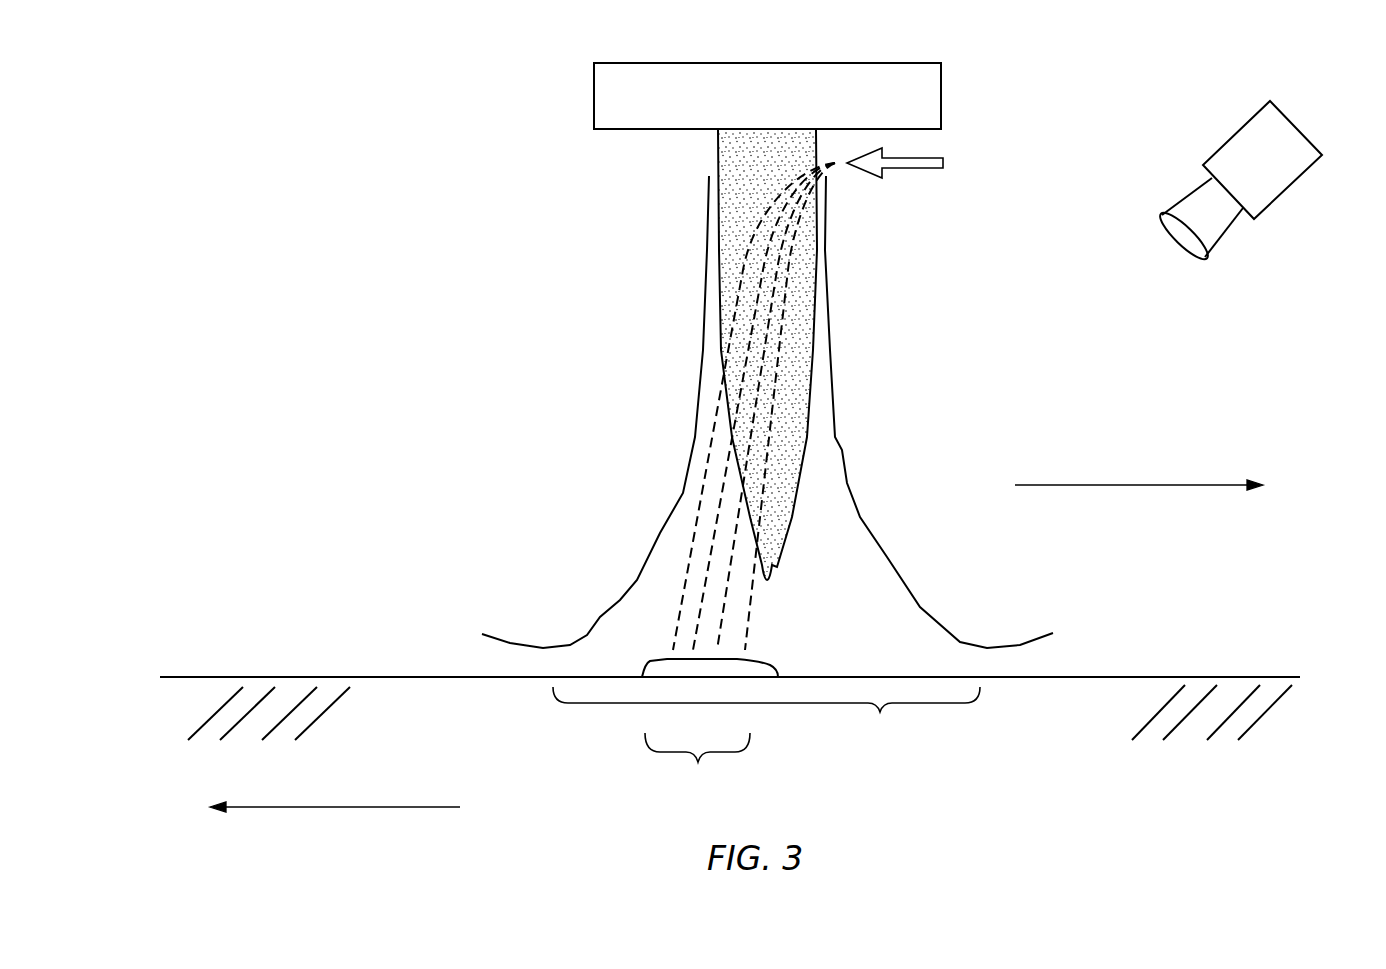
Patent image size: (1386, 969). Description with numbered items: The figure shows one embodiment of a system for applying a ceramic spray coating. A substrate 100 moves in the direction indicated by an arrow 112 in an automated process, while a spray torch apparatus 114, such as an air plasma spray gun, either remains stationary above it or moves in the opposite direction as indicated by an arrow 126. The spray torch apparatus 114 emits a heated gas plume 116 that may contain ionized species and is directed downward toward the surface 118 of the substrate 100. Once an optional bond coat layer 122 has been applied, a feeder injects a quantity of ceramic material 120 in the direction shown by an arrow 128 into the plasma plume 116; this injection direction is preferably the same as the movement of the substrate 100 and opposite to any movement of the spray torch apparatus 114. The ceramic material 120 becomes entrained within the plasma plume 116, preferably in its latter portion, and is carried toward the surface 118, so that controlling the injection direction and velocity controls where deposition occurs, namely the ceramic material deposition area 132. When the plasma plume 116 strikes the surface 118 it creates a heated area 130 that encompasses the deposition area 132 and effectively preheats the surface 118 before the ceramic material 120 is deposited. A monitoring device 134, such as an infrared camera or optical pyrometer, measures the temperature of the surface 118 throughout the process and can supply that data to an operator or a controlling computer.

The substrate 100 is at (1021, 760).
The arrow 112 is at (416, 807).
The spray torch apparatus 114 is at (941, 90).
The heated gas plume 116 is at (813, 392).
The surface 118 is at (408, 677).
The ceramic material 120 is at (840, 170).
The bond coat layer 122 is at (762, 668).
The arrow 126 is at (1122, 485).
The arrow 128 is at (945, 163).
The heated area 130 is at (766, 716).
The ceramic material deposition area 132 is at (697, 763).
The monitoring device 134 is at (1270, 183).